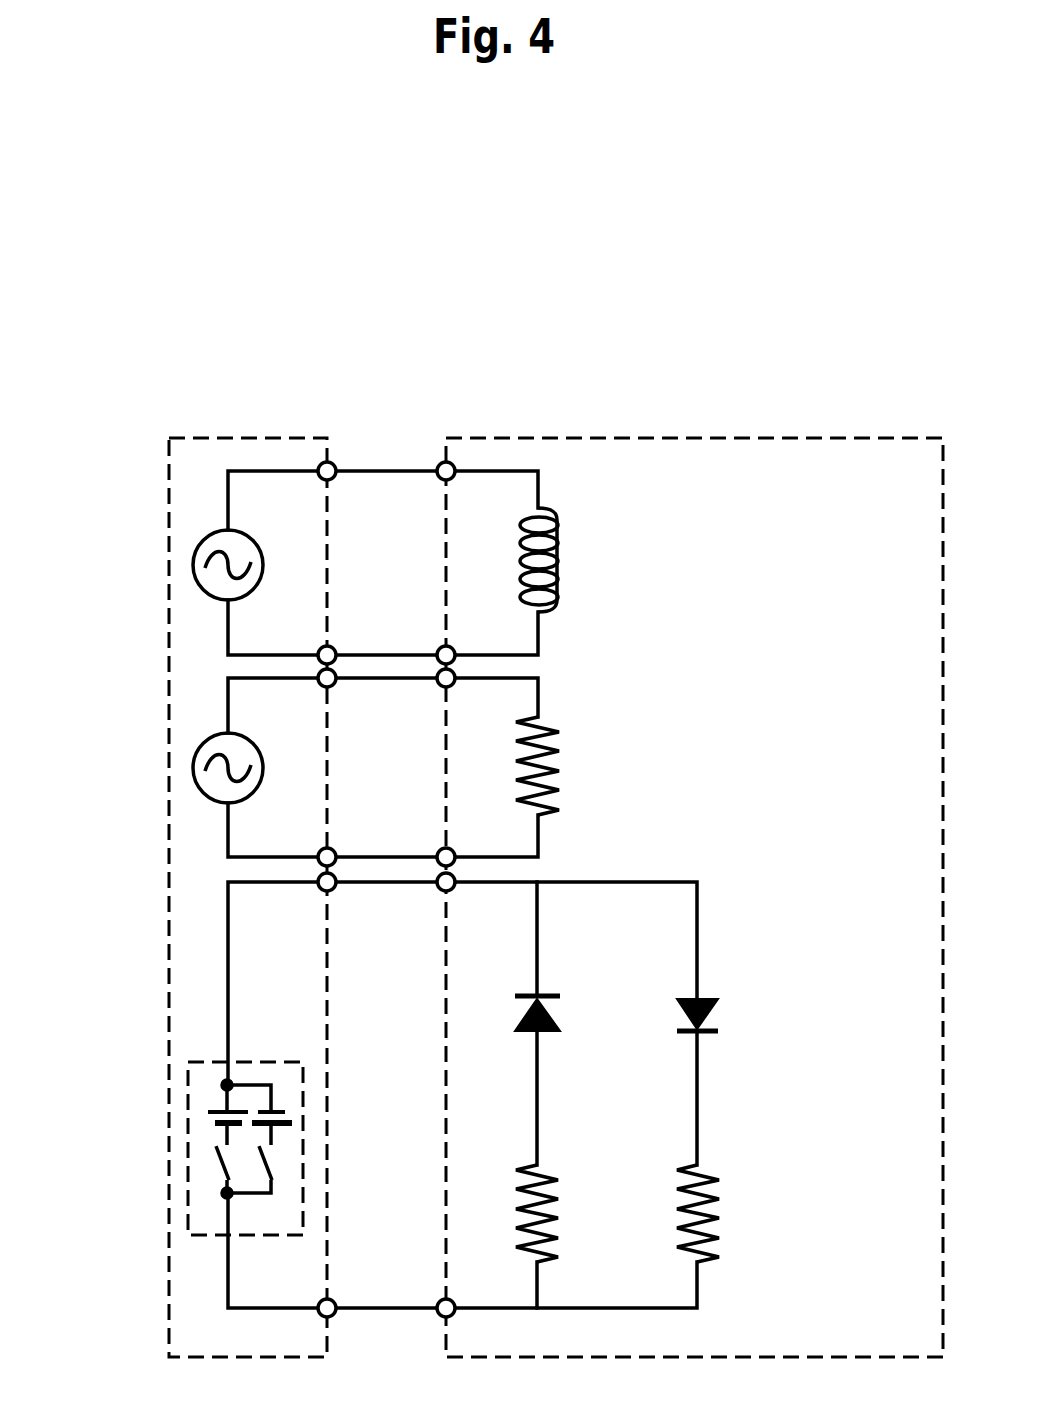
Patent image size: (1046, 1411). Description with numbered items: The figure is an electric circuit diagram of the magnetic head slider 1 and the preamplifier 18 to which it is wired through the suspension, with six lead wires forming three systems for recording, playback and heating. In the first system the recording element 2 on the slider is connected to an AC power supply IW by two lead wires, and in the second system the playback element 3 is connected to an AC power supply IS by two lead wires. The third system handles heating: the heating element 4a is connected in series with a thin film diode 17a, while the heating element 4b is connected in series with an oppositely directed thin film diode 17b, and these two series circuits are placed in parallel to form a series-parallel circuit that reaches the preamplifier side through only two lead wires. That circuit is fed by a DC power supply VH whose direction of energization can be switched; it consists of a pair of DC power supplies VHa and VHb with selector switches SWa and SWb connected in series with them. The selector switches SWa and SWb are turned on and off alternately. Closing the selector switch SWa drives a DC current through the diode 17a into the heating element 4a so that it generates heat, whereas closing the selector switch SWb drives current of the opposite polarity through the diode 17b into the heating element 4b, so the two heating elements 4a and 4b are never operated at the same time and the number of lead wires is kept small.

The magnetic head slider 1 is at (680, 438).
The preamplifier 18 is at (253, 438).
The recording element 2 is at (559, 533).
The playback element 3 is at (556, 745).
The thin film diode 17a is at (552, 1018).
The thin film diode 17b is at (718, 1010).
The heating element for outer surface 4a is at (553, 1198).
The heating element for outer surface 4b is at (720, 1187).
The AC power supply IW is at (195, 566).
The AC power supply IS is at (195, 769).
The DC power supply VH is at (187, 1064).
The DC power supply VHa is at (286, 1113).
The DC power supply VHb is at (208, 1113).
The selector switch SWa is at (273, 1160).
The selector switch SWb is at (216, 1160).